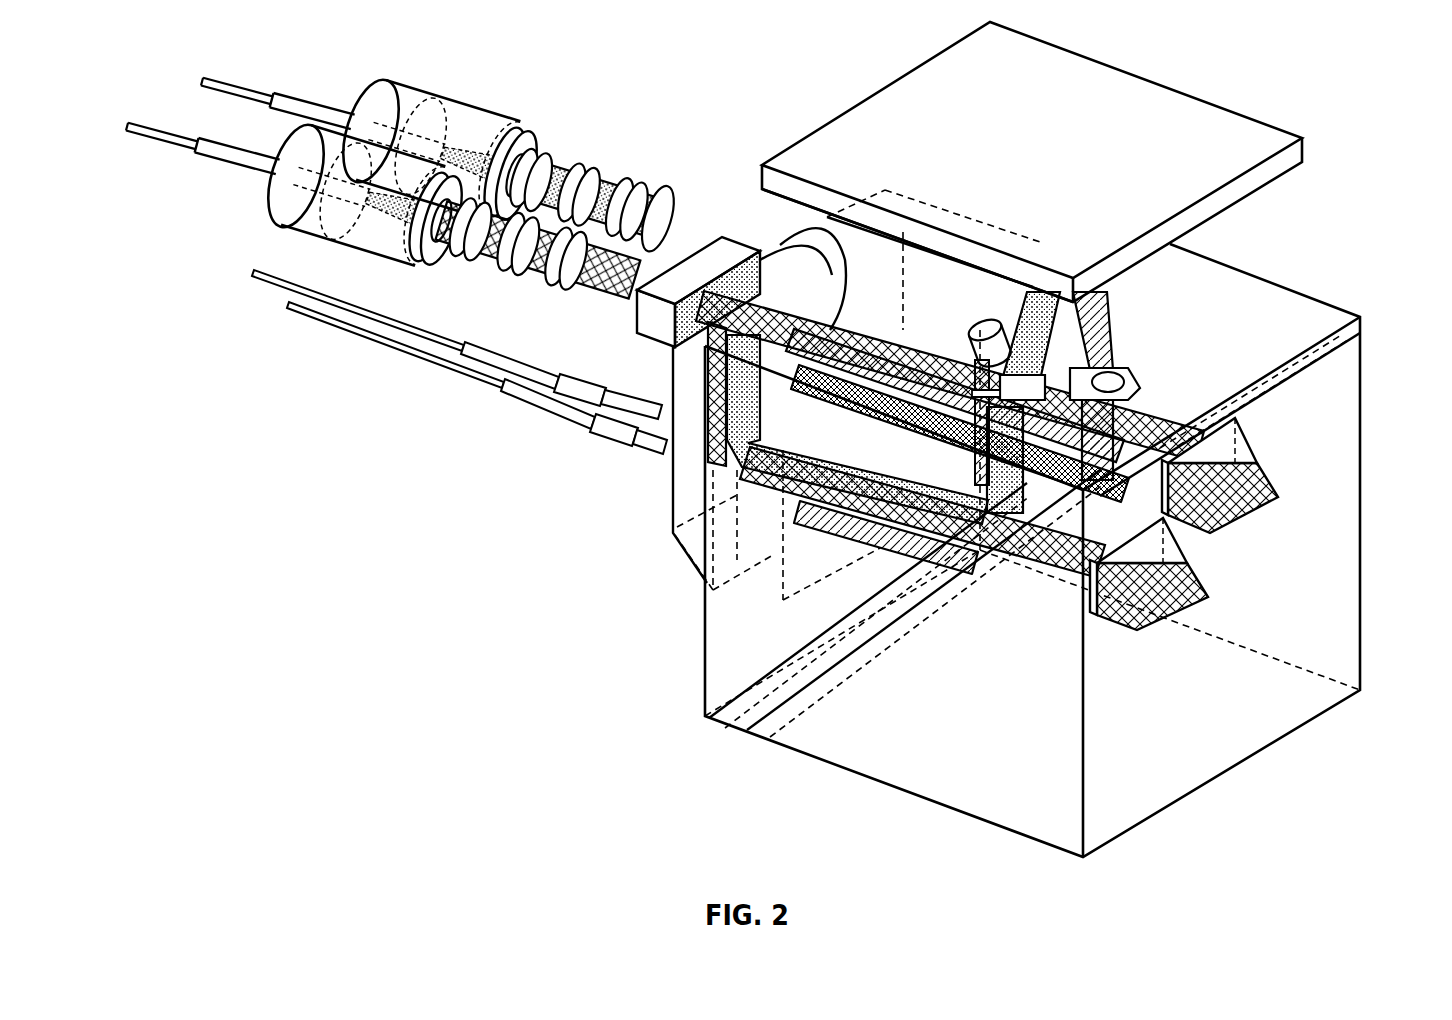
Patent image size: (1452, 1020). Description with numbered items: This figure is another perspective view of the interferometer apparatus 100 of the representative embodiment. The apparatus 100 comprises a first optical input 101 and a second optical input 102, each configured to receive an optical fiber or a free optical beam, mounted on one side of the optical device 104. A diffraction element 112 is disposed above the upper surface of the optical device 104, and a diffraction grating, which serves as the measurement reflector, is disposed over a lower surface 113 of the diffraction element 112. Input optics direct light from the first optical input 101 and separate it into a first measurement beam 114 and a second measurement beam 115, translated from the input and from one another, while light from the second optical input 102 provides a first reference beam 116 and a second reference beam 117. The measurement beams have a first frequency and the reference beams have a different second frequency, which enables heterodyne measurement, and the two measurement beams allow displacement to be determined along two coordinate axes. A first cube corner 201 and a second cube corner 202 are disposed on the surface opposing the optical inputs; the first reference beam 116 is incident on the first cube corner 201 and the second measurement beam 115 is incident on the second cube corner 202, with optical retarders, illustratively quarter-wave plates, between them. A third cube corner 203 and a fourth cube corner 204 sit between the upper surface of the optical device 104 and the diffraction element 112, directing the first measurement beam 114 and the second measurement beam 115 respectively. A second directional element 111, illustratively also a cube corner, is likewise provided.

The apparatus 100 is at (1333, 78).
The first optical input 101 is at (465, 110).
The second optical input 102 is at (318, 233).
The optical device 104 is at (1343, 672).
The second directional element 111 is at (975, 325).
The diffraction element 112 is at (1250, 140).
The lower surface 113 is at (1265, 190).
The first measurement beam 114 is at (860, 457).
The second measurement beam 115 is at (735, 295).
The first reference beam 116 is at (770, 457).
The second reference beam 117 is at (810, 227).
The first cube corner 201 is at (1145, 620).
The second cube corner 202 is at (1250, 437).
The third cube corner 203 is at (1027, 490).
The fourth cube corner 204 is at (1130, 380).